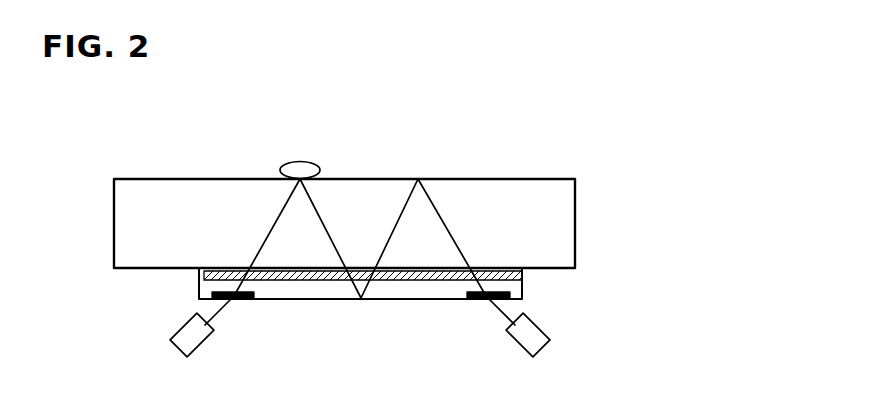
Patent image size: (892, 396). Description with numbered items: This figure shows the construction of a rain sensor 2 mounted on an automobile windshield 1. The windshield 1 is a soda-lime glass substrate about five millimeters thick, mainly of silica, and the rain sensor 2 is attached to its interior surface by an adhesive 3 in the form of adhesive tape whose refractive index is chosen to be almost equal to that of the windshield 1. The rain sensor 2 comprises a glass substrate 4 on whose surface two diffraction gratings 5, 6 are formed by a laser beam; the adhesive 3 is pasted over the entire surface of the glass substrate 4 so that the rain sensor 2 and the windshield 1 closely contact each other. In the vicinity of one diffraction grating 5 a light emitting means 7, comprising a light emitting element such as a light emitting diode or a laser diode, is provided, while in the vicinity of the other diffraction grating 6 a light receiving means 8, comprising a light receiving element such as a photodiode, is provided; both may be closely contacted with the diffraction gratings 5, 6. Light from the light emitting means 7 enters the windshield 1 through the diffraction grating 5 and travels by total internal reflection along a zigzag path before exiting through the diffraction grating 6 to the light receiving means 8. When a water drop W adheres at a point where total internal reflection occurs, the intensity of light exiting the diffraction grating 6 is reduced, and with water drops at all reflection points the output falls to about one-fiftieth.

The windshield 1 is at (128, 222).
The rain sensor 2 is at (343, 310).
The adhesive 3 is at (199, 273).
The glass substrate 4 is at (295, 292).
The diffraction grating 5 is at (478, 298).
The diffraction grating 6 is at (238, 302).
The light emitting means 7 is at (535, 348).
The light receiving means 8 is at (187, 342).
The water drop W is at (300, 162).